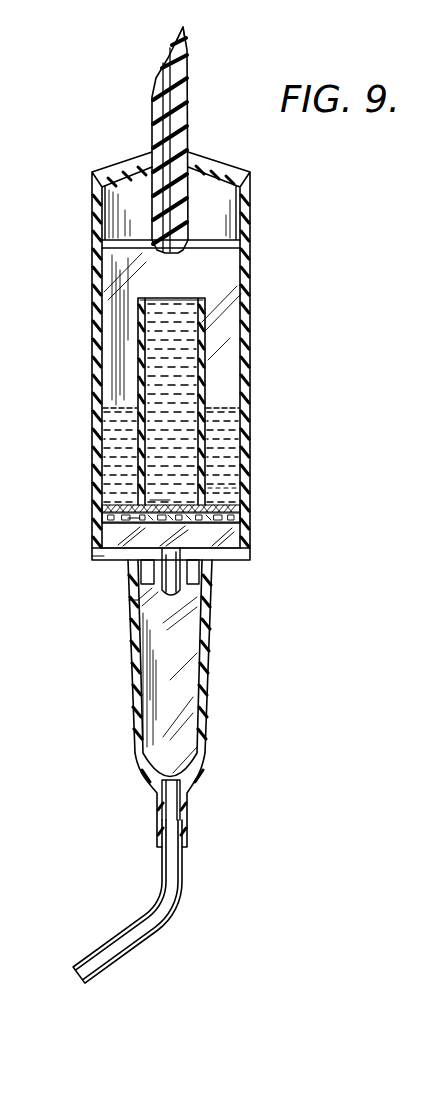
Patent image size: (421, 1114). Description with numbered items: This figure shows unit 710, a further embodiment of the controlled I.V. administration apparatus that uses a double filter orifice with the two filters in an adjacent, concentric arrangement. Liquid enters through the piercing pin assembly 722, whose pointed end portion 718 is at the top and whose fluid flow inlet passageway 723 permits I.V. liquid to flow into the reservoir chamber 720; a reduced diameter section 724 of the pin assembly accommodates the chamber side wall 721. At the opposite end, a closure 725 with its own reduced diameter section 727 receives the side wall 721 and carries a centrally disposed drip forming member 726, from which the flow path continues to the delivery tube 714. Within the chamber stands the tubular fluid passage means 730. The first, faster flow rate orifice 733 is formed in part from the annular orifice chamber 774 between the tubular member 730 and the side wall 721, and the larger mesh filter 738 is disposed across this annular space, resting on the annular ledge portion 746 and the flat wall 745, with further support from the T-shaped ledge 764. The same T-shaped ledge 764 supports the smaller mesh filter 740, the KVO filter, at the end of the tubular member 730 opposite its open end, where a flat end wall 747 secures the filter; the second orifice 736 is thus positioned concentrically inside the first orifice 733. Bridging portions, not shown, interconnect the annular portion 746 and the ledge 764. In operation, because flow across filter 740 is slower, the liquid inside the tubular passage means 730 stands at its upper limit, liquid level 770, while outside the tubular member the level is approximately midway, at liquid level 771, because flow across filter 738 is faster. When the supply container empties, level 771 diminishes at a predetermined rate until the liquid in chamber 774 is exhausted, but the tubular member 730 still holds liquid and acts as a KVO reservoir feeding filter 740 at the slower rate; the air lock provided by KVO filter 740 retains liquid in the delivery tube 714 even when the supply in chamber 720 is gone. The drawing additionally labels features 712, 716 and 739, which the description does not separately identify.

The unit 710 is at (90, 191).
The reservoir 712 is at (212, 683).
The delivery tube 714 is at (157, 937).
The first liquid 716 is at (237, 467).
The pointed end portion 718 is at (187, 44).
The reservoir chamber 720 is at (251, 332).
The side wall 721 is at (252, 419).
The piercing pin assembly 722 is at (189, 96).
The fluid flow inlet passageway 723 is at (169, 65).
The reduced diameter section 724 is at (240, 213).
The closure 725 is at (118, 568).
The drip forming member 726 is at (140, 612).
The reduced diameter section 727 is at (205, 560).
The tubular fluid passage means 730 is at (206, 352).
The first orifice 733 is at (248, 536).
The second orifice 736 is at (97, 563).
The larger mesh filter 738 is at (130, 505).
The second liquid 739 is at (194, 399).
The smaller mesh filter 740 is at (163, 500).
The flat wall 745 is at (245, 515).
The annular ledge portion 746 is at (133, 518).
The flat end wall 747 is at (195, 520).
The T-shaped ledge 764 is at (140, 530).
The liquid level 770 is at (186, 297).
The liquid level 771 is at (115, 407).
The orifice chamber 774 is at (232, 489).